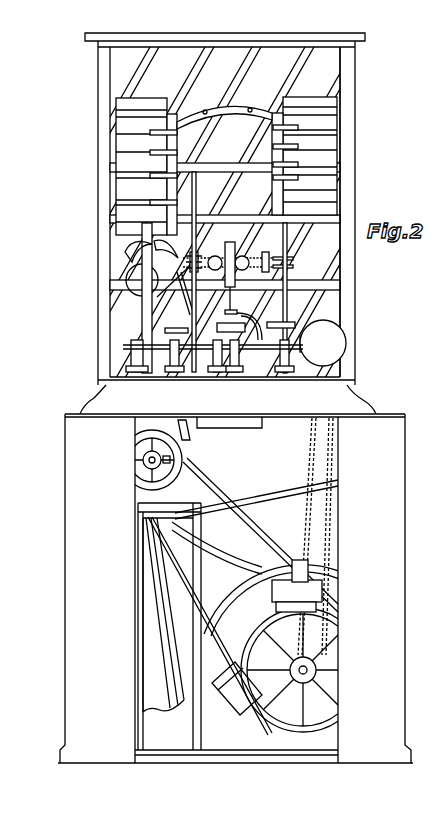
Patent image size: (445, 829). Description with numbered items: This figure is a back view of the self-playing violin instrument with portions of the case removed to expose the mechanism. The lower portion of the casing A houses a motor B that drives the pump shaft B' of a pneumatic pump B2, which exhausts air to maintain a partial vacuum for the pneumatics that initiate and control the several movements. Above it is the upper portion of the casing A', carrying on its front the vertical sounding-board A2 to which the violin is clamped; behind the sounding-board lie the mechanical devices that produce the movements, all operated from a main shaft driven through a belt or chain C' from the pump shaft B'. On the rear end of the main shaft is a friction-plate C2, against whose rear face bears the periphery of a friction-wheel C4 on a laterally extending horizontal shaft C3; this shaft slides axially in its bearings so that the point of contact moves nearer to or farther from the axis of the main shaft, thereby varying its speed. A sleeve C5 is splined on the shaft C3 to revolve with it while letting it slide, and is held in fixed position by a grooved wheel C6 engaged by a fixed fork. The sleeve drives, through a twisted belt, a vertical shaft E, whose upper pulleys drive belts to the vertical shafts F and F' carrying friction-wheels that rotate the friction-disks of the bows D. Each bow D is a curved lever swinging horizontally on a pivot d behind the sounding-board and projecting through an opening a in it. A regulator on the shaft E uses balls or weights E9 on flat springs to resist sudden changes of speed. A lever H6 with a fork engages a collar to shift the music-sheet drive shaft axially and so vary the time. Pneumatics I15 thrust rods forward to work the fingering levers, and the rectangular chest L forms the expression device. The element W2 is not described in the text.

The lower portion of the casing A is at (245, 588).
The upper portion of the casing A' is at (357, 212).
The sounding-board A2 is at (108, 78).
The motor B is at (217, 521).
The pump shaft B' is at (293, 646).
The pneumatic pump B2 is at (285, 716).
The belt or chain C' is at (331, 536).
The friction-plate C2 is at (340, 345).
The horizontal shaft C3 is at (136, 279).
The friction-wheel C4 is at (127, 248).
The sleeve C5 is at (318, 326).
The grooved wheel C6 is at (122, 252).
The bow D is at (268, 252).
The vertical shaft E is at (239, 315).
The balls or weights E9 is at (232, 240).
The vertical shaft F is at (131, 296).
The vertical shaft F' is at (285, 298).
The lever H6 is at (189, 434).
The pneumatics I15 is at (124, 164).
The chest L is at (254, 425).
The bearing W2 is at (140, 353).
The opening a is at (212, 257).
The pivot d is at (194, 250).